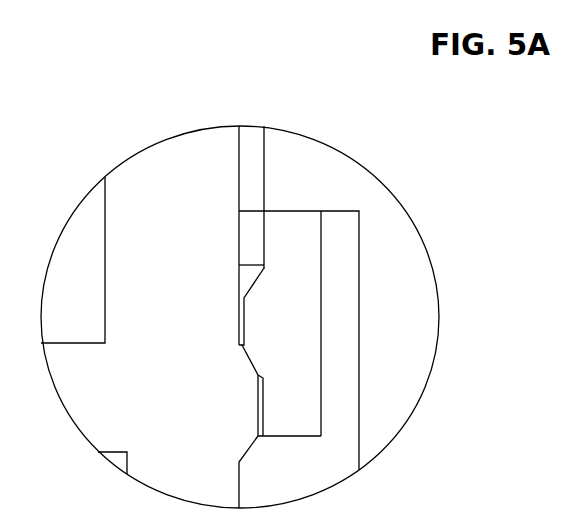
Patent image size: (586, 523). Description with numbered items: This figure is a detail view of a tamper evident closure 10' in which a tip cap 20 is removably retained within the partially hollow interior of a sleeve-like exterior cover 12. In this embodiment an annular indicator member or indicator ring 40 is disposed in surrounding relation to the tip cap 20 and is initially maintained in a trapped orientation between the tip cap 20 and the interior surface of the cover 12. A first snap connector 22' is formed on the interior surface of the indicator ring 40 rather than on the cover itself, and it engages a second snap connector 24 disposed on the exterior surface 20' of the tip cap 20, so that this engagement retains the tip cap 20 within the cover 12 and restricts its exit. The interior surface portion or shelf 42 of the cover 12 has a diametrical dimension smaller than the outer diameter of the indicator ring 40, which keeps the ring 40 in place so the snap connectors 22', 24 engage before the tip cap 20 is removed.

The exterior cover 12 is at (407, 277).
The indicator member 40 is at (519, 348).
The closure 10' is at (399, 500).
The tip cap 20 is at (205, 235).
The interior surface portion or shelf 42 is at (312, 192).
The second snap connector 24 is at (239, 345).
The first snap connector 22' is at (289, 405).
The exterior surface 20' is at (269, 472).